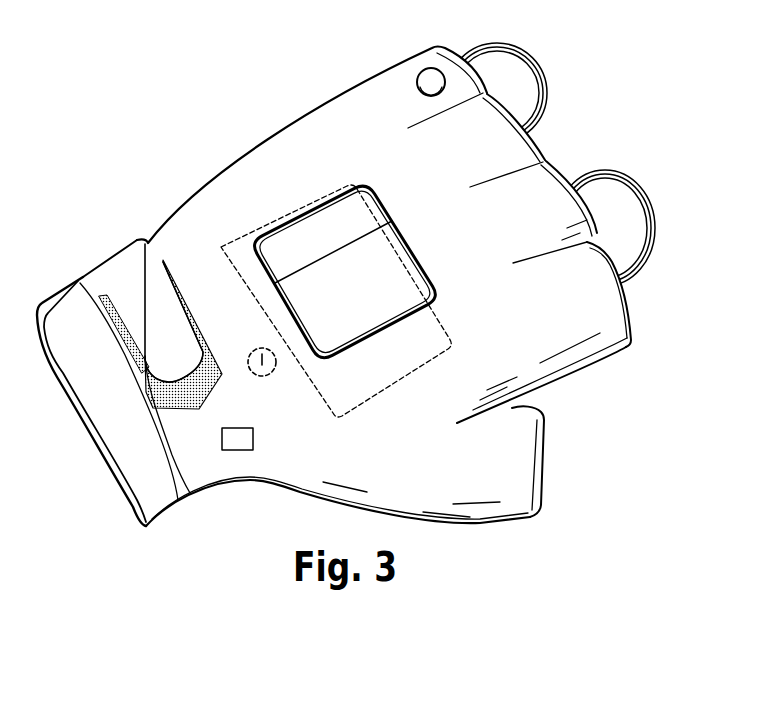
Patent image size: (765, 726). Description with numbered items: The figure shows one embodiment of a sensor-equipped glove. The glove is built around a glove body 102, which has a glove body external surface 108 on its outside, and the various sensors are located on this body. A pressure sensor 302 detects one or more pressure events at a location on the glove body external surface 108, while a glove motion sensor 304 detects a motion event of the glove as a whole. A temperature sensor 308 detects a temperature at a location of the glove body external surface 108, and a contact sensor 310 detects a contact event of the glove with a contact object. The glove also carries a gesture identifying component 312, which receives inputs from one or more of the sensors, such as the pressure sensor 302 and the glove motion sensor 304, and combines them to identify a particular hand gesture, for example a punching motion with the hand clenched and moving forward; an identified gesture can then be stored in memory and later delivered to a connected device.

The glove body 102 is at (220, 173).
The glove body external surface 108 is at (260, 182).
The pressure sensor 302 is at (261, 354).
The glove motion sensor 304 is at (327, 228).
The temperature sensor 308 is at (428, 78).
The contact sensor 310 is at (413, 357).
The gesture identifying component 312 is at (238, 440).